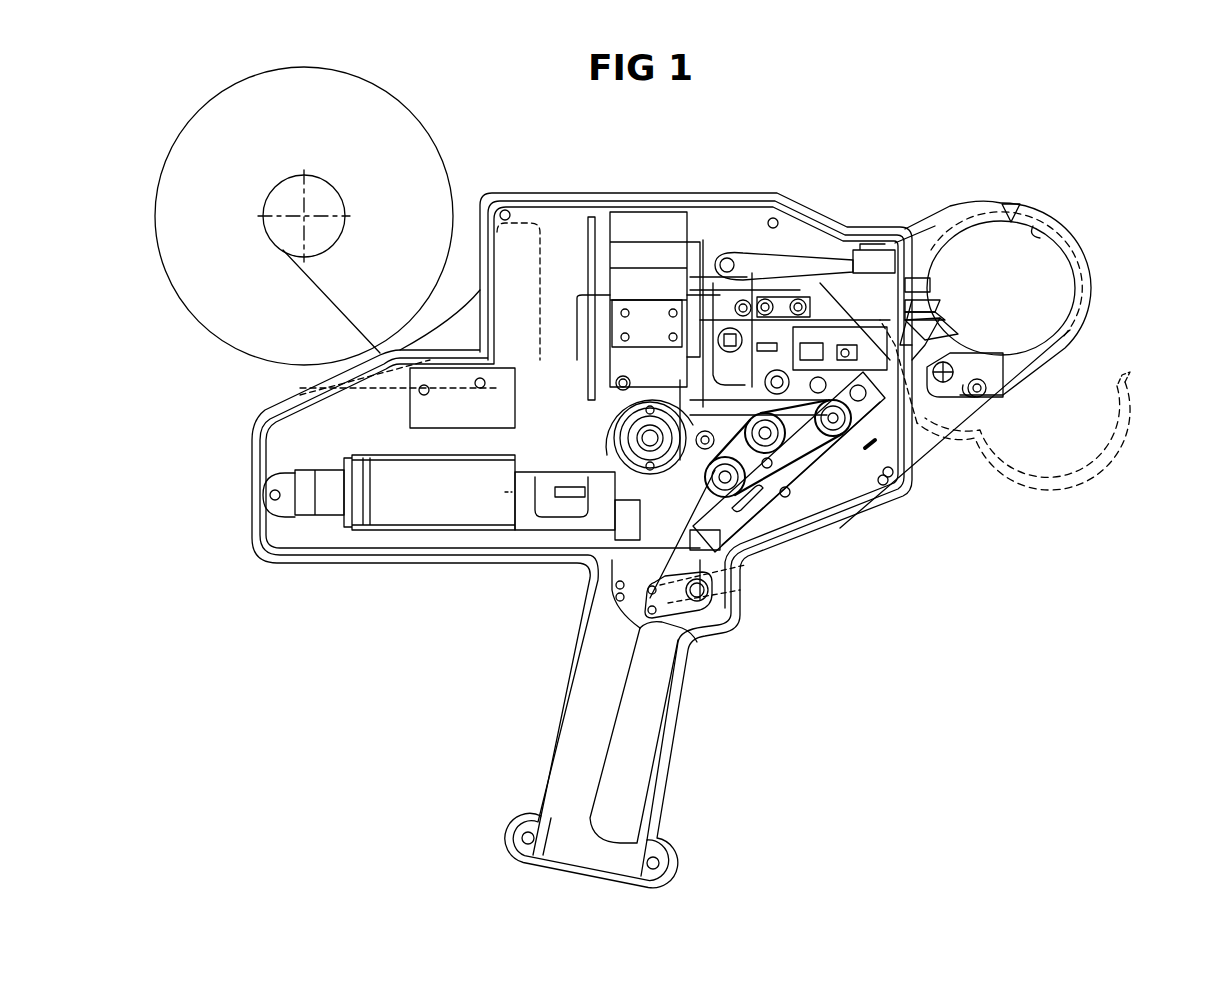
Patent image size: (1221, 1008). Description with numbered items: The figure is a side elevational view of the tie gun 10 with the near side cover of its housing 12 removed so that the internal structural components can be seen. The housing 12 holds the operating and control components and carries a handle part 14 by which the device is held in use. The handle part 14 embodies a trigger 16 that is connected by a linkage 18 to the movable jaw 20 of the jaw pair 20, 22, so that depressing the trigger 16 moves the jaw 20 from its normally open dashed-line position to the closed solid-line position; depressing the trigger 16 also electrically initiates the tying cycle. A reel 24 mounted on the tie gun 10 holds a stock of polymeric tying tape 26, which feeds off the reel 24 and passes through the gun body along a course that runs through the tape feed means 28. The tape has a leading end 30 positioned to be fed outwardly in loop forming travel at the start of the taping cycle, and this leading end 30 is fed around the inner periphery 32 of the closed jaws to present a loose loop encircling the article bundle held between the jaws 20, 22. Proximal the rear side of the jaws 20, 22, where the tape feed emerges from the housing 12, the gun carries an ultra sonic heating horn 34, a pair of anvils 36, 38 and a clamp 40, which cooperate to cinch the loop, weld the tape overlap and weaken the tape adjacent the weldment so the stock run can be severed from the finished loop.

The tie gun 10 is at (822, 166).
The housing 12 is at (357, 557).
The handle part 14 is at (614, 707).
The trigger 16 is at (744, 590).
The linkage 18 is at (757, 532).
The jaw 20 is at (1095, 292).
The jaw 22 is at (965, 210).
The reel 24 is at (313, 190).
The polymeric tying tape 26 is at (421, 212).
The tape feed means 28 is at (695, 412).
The tape leading end 30 is at (917, 423).
The inner periphery 32 is at (1033, 228).
The ultra sonic heating horn 34 is at (928, 278).
The anvil 36 is at (938, 312).
The anvil 38 is at (925, 316).
The clamp 40 is at (942, 317).